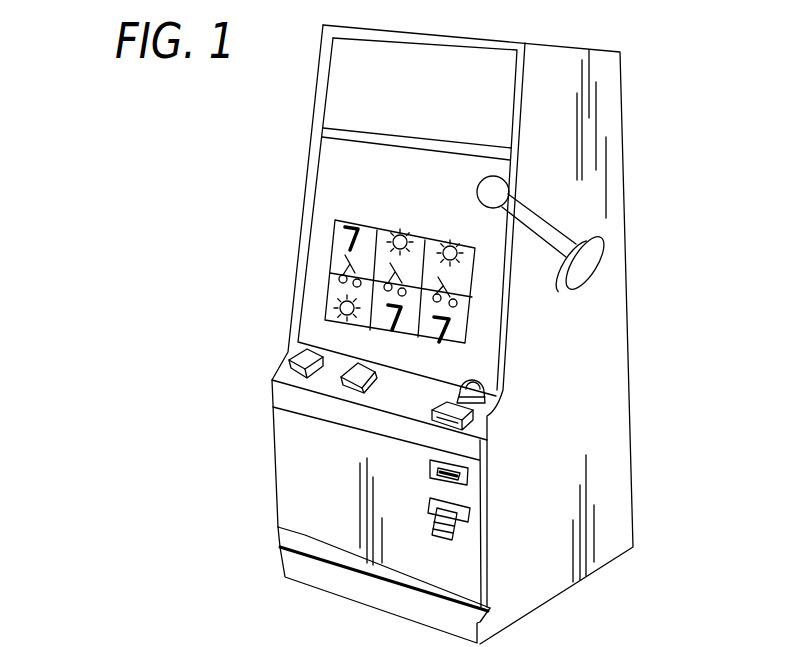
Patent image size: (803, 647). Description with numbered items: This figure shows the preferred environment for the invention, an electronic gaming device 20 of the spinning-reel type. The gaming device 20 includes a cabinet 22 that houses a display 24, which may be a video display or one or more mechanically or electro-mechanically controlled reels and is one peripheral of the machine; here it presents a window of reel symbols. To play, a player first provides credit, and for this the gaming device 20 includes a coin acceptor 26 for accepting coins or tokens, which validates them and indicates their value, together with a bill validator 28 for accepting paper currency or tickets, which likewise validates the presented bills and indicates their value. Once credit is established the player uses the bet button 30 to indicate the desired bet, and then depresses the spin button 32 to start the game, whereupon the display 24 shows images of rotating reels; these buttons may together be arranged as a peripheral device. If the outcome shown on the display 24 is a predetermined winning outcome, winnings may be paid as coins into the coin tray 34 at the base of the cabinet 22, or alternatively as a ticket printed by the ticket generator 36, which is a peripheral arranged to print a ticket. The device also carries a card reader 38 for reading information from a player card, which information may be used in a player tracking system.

The electronic gaming device 20 is at (643, 140).
The cabinet 22 is at (600, 50).
The display 24 is at (328, 260).
The coin acceptor 26 is at (483, 397).
The bill validator 28 is at (485, 428).
The bet button 30 is at (297, 355).
The spin button 32 is at (343, 384).
The coin tray 34 is at (310, 577).
The ticket generator 36 is at (460, 523).
The card reader 38 is at (468, 485).